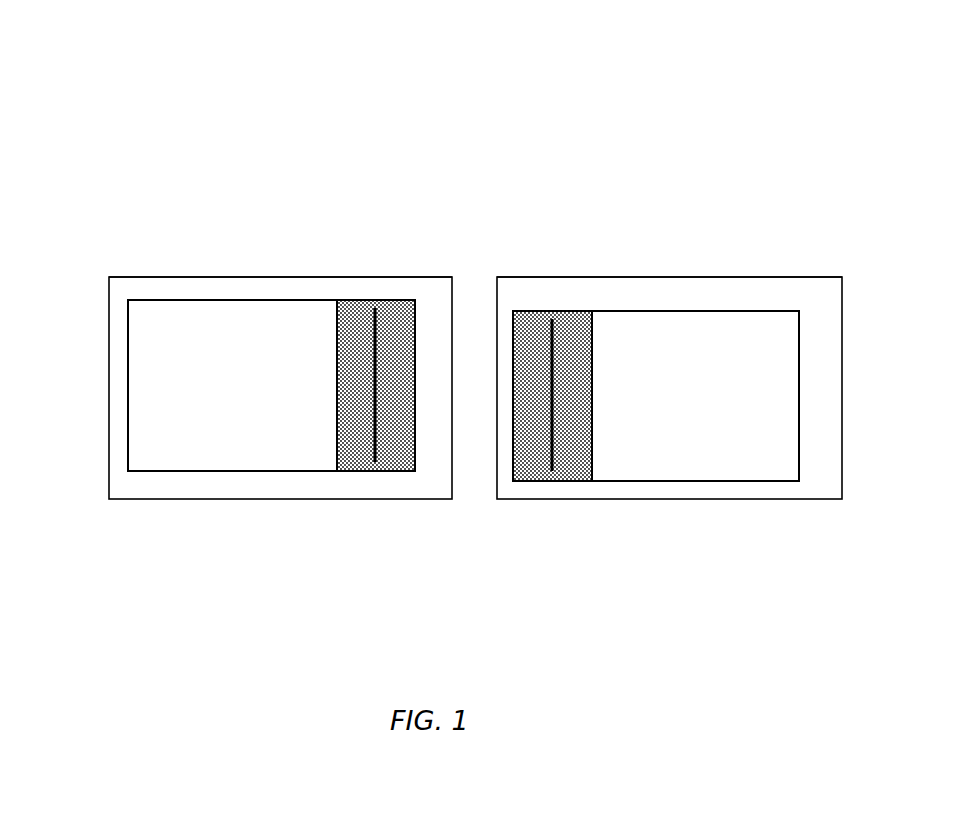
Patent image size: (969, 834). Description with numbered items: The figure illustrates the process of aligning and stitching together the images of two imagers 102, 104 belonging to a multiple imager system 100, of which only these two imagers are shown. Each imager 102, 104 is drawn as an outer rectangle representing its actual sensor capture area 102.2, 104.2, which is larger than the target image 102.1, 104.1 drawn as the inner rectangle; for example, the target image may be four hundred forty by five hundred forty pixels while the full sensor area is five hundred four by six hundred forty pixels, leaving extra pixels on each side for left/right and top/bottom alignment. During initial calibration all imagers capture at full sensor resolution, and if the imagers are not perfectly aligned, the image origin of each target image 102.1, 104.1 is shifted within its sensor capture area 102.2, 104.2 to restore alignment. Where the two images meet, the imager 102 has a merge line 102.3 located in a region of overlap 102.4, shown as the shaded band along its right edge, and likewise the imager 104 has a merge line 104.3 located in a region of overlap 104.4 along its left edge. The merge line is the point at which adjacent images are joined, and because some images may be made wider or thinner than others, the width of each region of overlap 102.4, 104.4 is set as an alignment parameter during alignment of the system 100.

The multiple imager system 100 is at (273, 146).
The imager 102 is at (95, 294).
The target image 102.1 is at (210, 303).
The sensor capture area 102.2 is at (250, 277).
The merge line 102.3 is at (375, 410).
The region of overlap 102.4 is at (412, 300).
The imager 104 is at (757, 258).
The target image 104.1 is at (688, 313).
The sensor capture area 104.2 is at (515, 277).
The merge line 104.3 is at (552, 382).
The region of overlap 104.4 is at (593, 311).